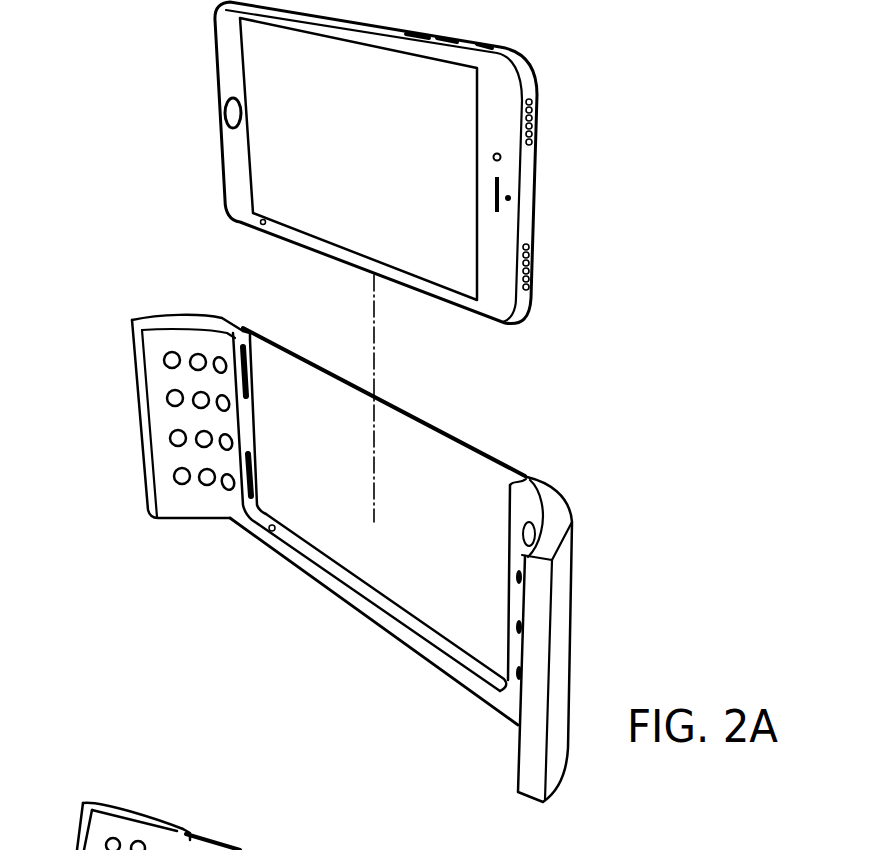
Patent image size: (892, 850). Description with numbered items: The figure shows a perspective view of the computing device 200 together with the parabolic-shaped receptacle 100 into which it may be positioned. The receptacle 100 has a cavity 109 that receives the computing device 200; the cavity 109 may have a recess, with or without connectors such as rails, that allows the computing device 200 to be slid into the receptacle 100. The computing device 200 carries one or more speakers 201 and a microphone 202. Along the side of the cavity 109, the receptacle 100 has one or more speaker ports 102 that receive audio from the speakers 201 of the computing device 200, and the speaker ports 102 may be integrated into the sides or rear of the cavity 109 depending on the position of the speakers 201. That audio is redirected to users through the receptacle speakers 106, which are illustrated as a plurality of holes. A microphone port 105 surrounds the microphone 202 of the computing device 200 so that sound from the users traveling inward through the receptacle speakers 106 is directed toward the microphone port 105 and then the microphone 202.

The parabolic-shaped receptacle 100 is at (622, 485).
The speaker ports 102 is at (254, 474).
The microphone port 105 is at (268, 536).
The receptacle speakers 106 is at (173, 400).
The cavity 109 is at (452, 555).
The computing device 200 is at (612, 71).
The speakers 201 is at (535, 128).
The microphone 202 is at (261, 224).